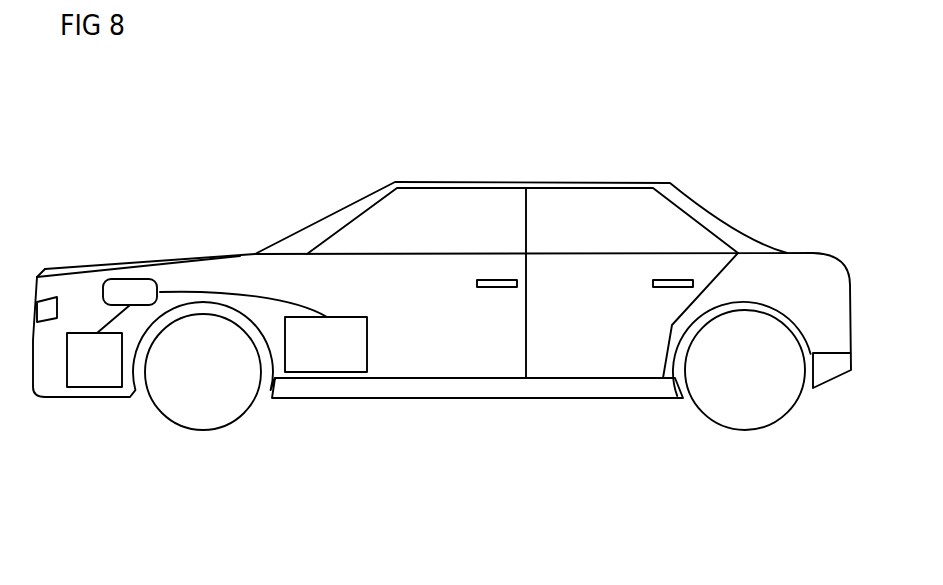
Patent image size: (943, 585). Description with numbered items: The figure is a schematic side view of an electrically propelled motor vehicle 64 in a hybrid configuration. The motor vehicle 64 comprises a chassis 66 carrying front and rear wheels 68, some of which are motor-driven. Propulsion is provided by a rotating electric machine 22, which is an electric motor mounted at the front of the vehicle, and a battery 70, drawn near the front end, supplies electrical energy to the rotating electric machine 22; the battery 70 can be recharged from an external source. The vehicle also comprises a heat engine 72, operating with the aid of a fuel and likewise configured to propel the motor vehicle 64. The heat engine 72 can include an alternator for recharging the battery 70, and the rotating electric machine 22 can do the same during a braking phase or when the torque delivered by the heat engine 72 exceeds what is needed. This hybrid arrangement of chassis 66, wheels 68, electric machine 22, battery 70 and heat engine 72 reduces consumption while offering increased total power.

The motor vehicle 64 is at (220, 178).
The chassis 66 is at (410, 384).
The wheels 68 is at (203, 388).
The battery 70 is at (138, 291).
The rotating electric machine 22 is at (88, 367).
The heat engine 72 is at (348, 346).